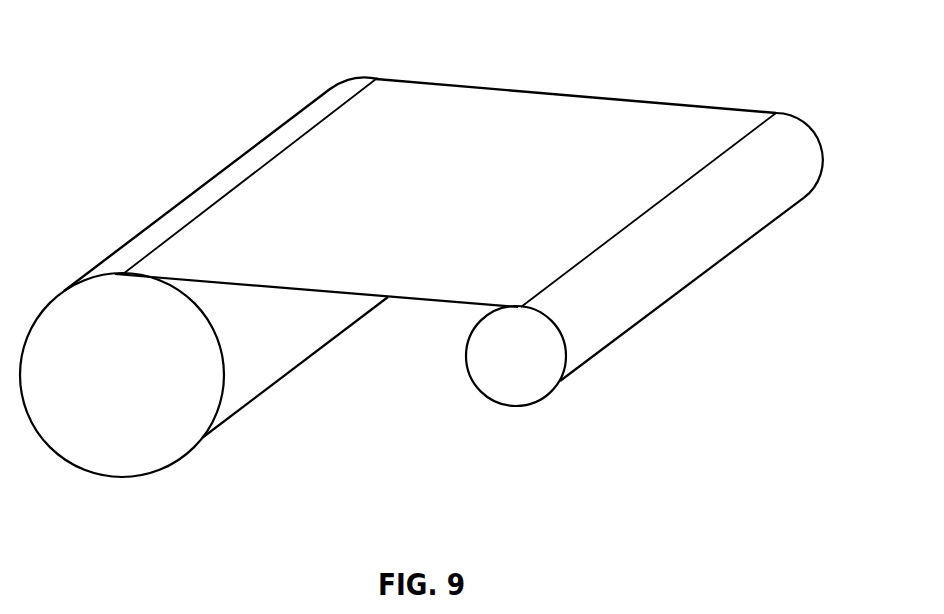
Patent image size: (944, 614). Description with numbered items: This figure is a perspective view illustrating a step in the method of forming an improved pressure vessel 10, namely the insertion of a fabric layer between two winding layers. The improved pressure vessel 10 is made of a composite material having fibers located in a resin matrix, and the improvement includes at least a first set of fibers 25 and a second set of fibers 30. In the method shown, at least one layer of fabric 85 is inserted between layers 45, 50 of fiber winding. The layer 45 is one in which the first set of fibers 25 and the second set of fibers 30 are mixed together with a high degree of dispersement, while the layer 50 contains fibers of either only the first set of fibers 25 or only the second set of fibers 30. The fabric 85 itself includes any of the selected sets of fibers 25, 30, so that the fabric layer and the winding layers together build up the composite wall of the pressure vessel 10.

The improved pressure vessel 10 is at (446, 245).
The first set of fibers 25 is at (797, 125).
The second set of fibers 30 is at (798, 168).
The layer of mixed fibers 45 is at (205, 193).
The layer of fibers of one set 50 is at (277, 368).
The layer of fabric 85 is at (623, 108).